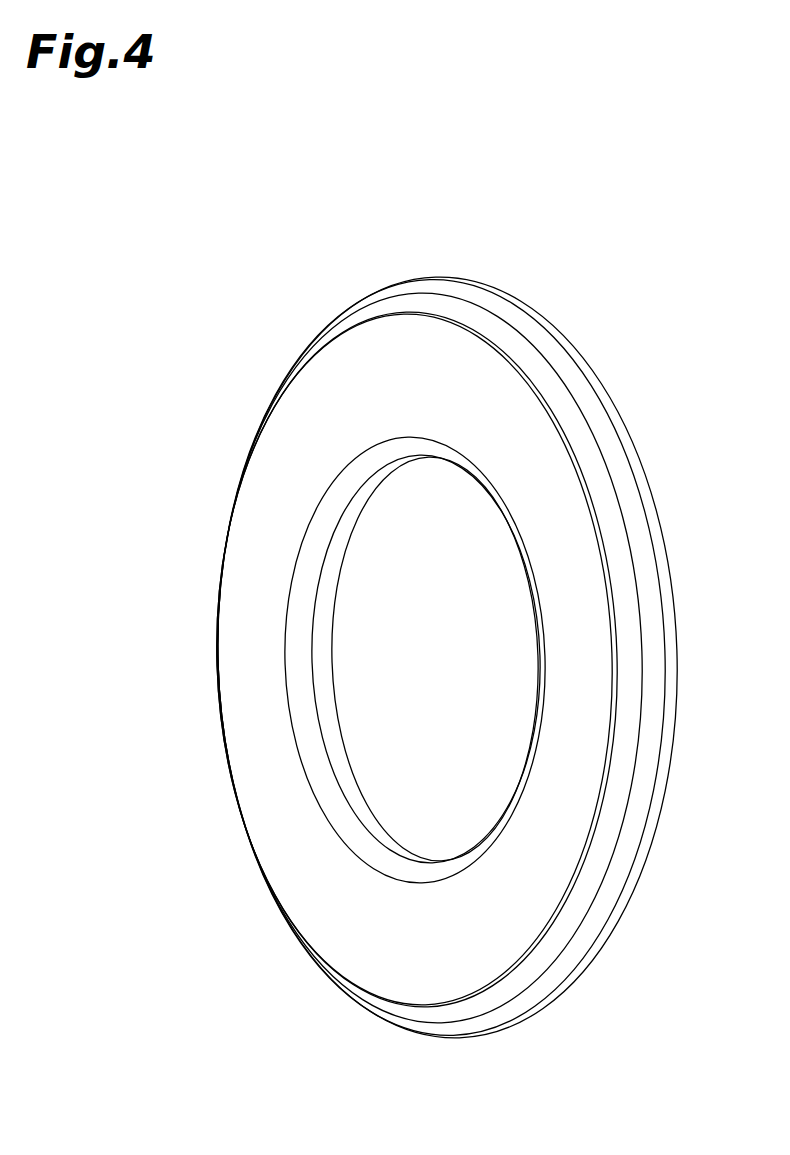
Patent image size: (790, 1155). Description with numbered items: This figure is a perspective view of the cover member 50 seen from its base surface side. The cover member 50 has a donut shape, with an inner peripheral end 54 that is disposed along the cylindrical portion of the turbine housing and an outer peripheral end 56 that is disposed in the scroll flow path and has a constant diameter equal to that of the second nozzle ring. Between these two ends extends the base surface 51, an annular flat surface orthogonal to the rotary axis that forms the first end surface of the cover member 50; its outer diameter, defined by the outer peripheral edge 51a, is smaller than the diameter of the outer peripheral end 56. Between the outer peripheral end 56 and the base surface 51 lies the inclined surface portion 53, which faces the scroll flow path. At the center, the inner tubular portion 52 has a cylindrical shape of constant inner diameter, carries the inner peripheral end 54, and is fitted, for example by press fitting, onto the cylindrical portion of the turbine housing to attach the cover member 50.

The cover member 50 is at (458, 598).
The base surface 51 is at (300, 873).
The outer peripheral edge 51a is at (548, 923).
The inner tubular portion 52 is at (318, 663).
The inclined surface portion 53 is at (615, 478).
The inner peripheral end 54 is at (435, 659).
The outer peripheral end 56 is at (536, 306).